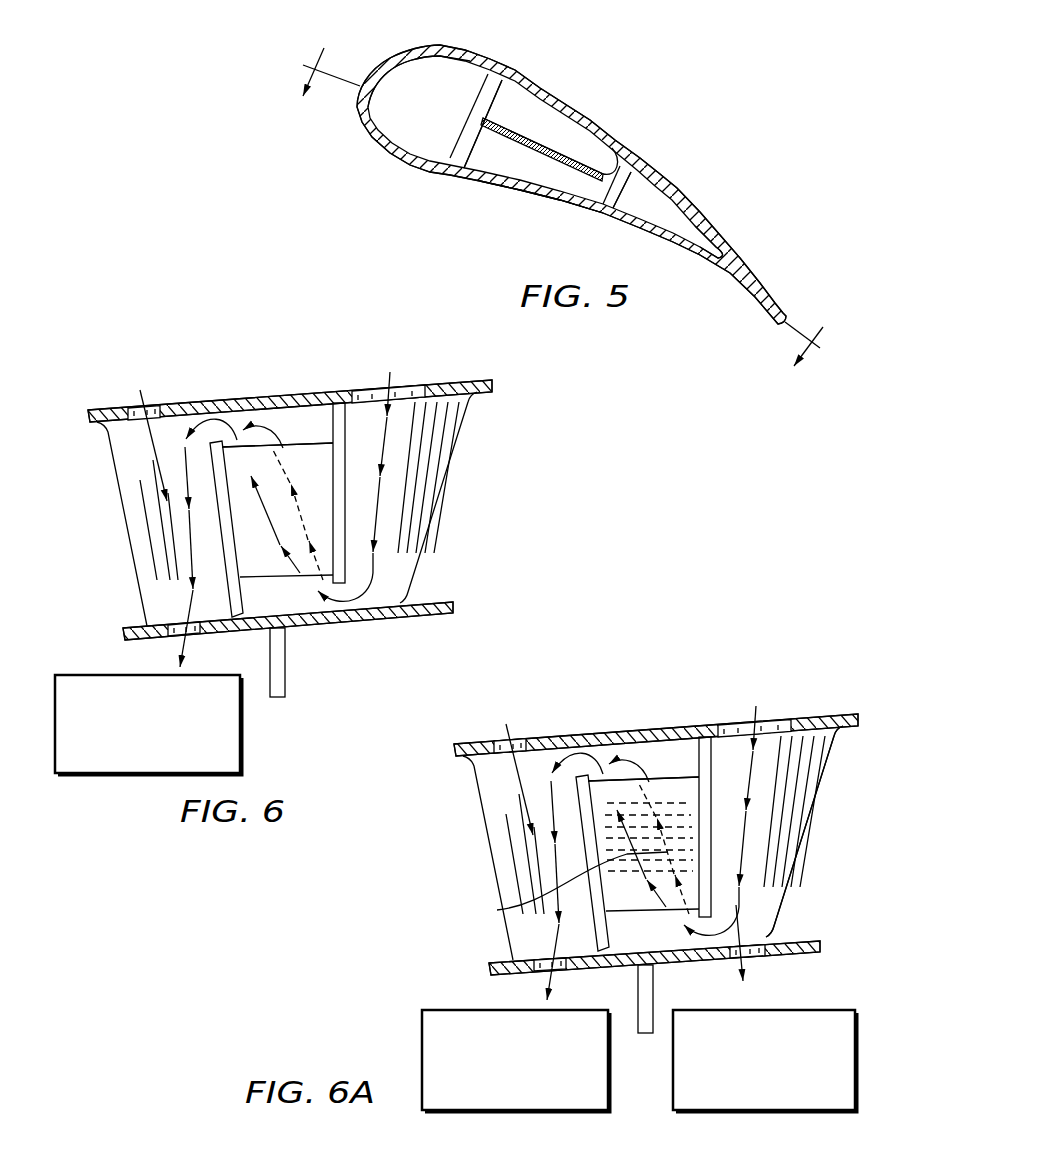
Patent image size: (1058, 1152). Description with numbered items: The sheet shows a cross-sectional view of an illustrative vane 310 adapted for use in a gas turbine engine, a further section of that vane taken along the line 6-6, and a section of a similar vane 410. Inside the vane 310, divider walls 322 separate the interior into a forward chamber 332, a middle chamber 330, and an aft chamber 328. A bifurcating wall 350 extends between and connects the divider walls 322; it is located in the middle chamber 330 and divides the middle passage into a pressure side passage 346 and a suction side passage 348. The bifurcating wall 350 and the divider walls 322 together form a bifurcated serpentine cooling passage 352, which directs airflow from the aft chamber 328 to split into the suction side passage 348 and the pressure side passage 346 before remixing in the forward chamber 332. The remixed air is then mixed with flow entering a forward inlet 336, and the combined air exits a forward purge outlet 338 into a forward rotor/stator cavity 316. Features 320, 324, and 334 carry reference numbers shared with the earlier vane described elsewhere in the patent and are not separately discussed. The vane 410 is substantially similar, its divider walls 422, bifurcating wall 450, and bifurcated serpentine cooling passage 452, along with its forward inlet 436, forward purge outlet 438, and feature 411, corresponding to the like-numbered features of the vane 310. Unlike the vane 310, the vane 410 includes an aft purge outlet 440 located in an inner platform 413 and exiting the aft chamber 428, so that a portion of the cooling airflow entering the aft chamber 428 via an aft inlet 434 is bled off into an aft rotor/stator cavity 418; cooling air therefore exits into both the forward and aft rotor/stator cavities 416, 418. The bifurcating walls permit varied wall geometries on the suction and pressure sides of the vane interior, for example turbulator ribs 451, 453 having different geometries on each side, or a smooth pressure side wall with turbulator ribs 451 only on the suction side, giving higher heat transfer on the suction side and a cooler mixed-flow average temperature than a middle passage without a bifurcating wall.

In FIG. 5, the section line 6 is at (570, 196).
In FIG. 5, the vane 310 is at (753, 92).
In FIG. 6, the vane 310 is at (122, 322).
In FIG. 5, the divider walls 322 is at (450, 143).
In FIG. 6, the divider walls 322 is at (218, 440).
In FIG. 5, the airfoil wall 324 is at (677, 186).
In FIG. 5, the aft chamber 328 is at (690, 236).
In FIG. 5, the middle chamber 330 is at (527, 195).
In FIG. 5, the forward chamber 332 is at (393, 77).
In FIG. 5, the pressure side passage 346 is at (487, 150).
In FIG. 5, the suction side passage 348 is at (592, 150).
In FIG. 5, the bifurcating wall 350 is at (565, 148).
In FIG. 6, the bifurcating wall 350 is at (290, 447).
In FIG. 5, the bifurcated serpentine cooling passage 352 is at (612, 103).
In FIG. 6, the bifurcated serpentine cooling passage 352 is at (317, 342).
In FIG. 6, the forward rotor/stator cavity 316 is at (105, 676).
In FIG. 6, the rotor shaft 320 is at (291, 684).
In FIG. 6, the outer platform 334 is at (410, 381).
In FIG. 6, the forward inlet 336 is at (132, 404).
In FIG. 6, the forward purge outlet 338 is at (197, 639).
In FIG. 6A, the vane 410 is at (766, 597).
In FIG. 6A, the outer platform 411 is at (851, 717).
In FIG. 6A, the inner platform 413 is at (803, 953).
In FIG. 6A, the forward rotor/stator cavity 416 is at (420, 1062).
In FIG. 6A, the aft rotor/stator cavity 418 is at (726, 1010).
In FIG. 6A, the cavity wall 422 is at (584, 776).
In FIG. 6A, the aft chamber 428 is at (799, 813).
In FIG. 6A, the aft inlet 434 is at (776, 716).
In FIG. 6A, the outer platform forward portion 436 is at (498, 739).
In FIG. 6A, the forward seal 438 is at (561, 978).
In FIG. 6A, the aft purge outlet 440 is at (753, 964).
In FIG. 6A, the baffle 450 is at (656, 781).
In FIG. 6A, the turbulator ribs 451 is at (700, 800).
In FIG. 6A, the cavity arrangement 452 is at (684, 677).
In FIG. 6A, the turbulator ribs 453 is at (563, 887).